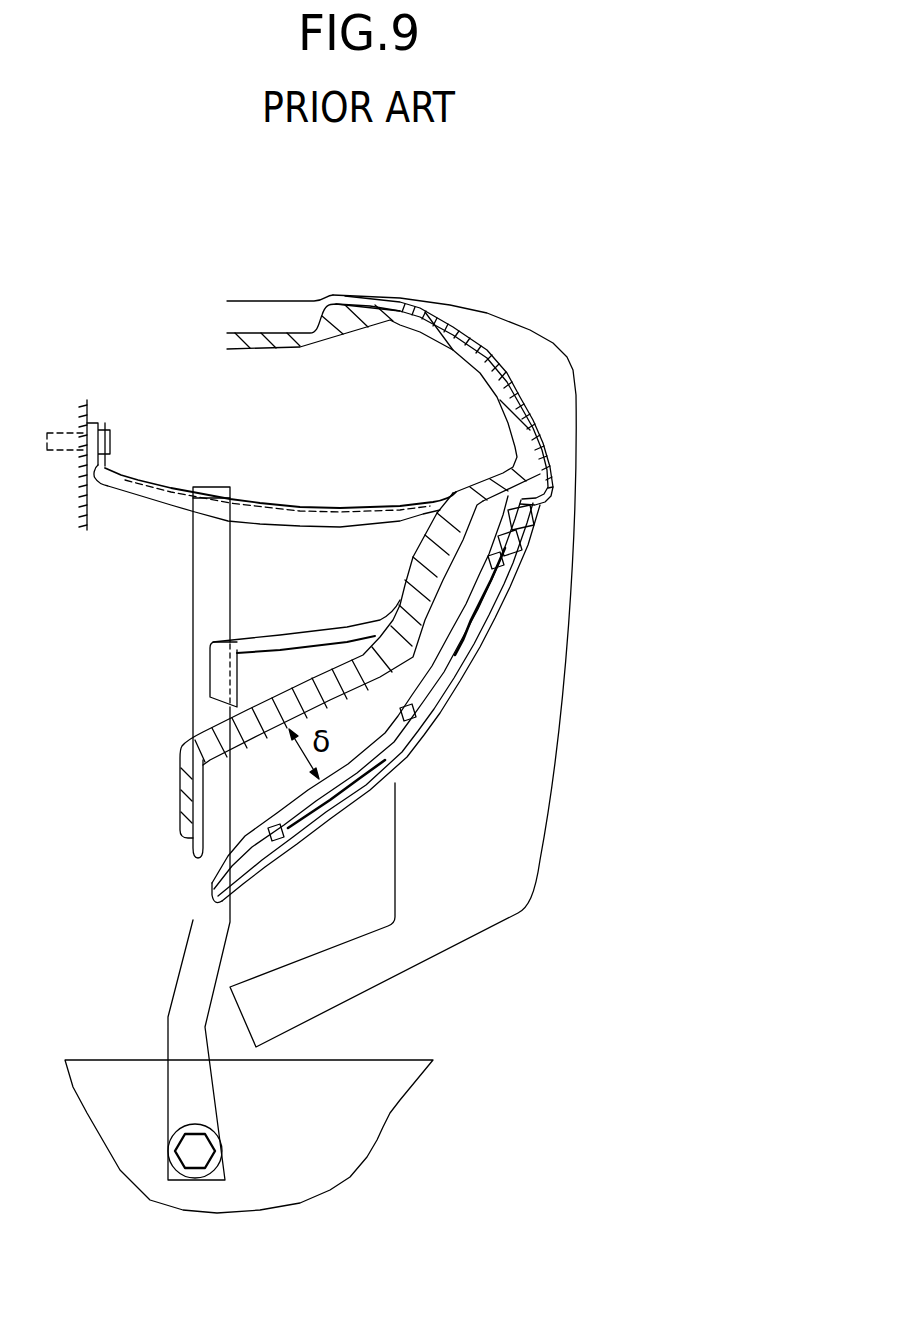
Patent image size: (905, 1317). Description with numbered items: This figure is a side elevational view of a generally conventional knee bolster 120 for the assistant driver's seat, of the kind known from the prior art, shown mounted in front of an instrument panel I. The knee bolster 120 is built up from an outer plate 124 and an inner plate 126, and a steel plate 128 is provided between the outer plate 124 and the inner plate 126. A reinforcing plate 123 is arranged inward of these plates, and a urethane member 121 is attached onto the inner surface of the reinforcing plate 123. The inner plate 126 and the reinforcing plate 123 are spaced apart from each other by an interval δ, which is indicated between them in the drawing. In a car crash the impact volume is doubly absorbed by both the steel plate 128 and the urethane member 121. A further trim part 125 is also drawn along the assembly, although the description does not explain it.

The instrument panel I is at (590, 500).
The knee bolster 120 is at (506, 624).
The urethane member 121 is at (485, 377).
The reinforcing plate 123 is at (274, 733).
The outer plate 124 is at (413, 730).
The trim molding 125 is at (293, 512).
The inner plate 126 is at (307, 790).
The steel plate 128 is at (470, 633).